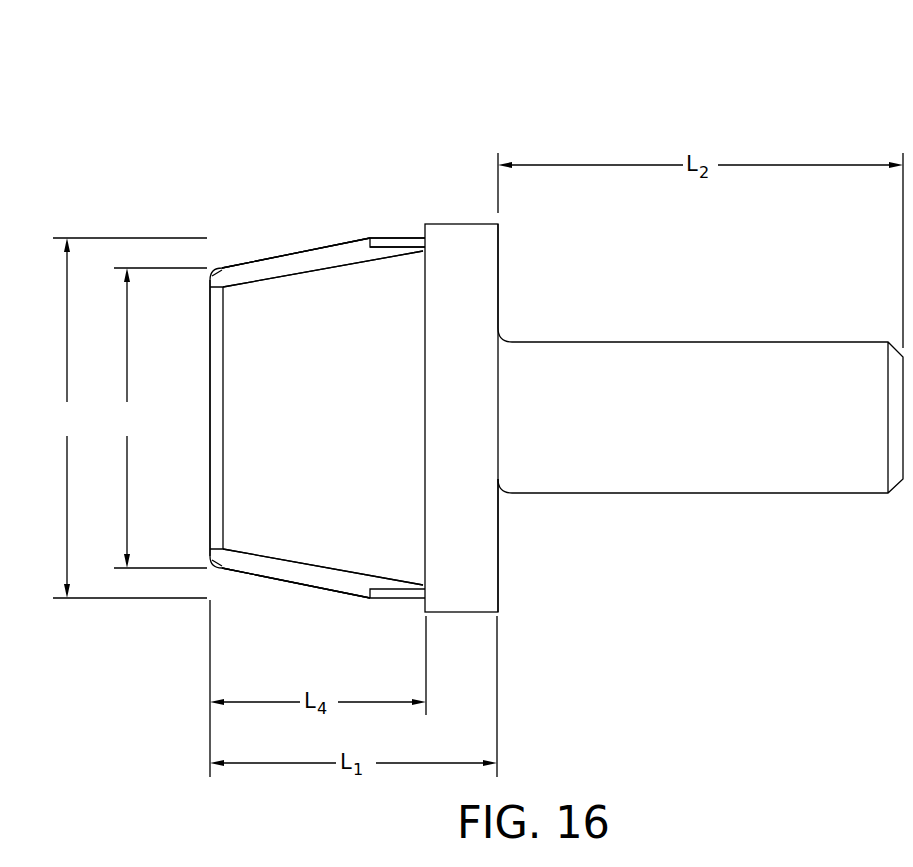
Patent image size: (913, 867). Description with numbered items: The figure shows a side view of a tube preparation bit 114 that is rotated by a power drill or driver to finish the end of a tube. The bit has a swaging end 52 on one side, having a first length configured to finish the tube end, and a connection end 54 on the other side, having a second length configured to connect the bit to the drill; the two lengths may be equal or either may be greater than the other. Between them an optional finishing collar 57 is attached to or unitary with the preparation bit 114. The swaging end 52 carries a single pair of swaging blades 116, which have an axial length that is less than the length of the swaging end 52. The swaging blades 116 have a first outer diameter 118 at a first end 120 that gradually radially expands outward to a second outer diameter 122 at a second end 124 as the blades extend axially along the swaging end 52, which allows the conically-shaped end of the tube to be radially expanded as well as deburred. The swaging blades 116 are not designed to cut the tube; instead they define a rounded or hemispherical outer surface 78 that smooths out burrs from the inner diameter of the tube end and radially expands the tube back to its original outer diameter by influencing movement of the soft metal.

The swaging end 52 is at (197, 377).
The connection end 54 is at (704, 332).
The finishing collar 57 is at (508, 624).
The rounded or hemispherical outer surface 78 is at (295, 250).
The tube preparation bit 114 is at (766, 102).
The swaging blades 116 is at (334, 234).
The first outer diameter 118 is at (158, 418).
The first end 120 is at (208, 493).
The second outer diameter 122 is at (127, 418).
The second end 124 is at (398, 238).